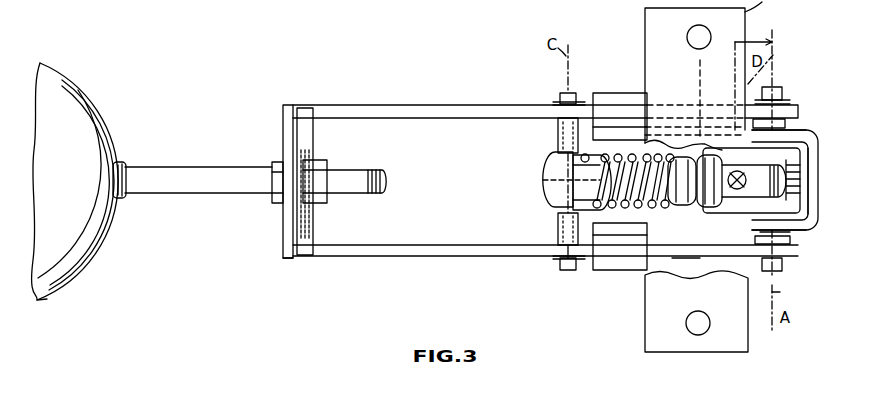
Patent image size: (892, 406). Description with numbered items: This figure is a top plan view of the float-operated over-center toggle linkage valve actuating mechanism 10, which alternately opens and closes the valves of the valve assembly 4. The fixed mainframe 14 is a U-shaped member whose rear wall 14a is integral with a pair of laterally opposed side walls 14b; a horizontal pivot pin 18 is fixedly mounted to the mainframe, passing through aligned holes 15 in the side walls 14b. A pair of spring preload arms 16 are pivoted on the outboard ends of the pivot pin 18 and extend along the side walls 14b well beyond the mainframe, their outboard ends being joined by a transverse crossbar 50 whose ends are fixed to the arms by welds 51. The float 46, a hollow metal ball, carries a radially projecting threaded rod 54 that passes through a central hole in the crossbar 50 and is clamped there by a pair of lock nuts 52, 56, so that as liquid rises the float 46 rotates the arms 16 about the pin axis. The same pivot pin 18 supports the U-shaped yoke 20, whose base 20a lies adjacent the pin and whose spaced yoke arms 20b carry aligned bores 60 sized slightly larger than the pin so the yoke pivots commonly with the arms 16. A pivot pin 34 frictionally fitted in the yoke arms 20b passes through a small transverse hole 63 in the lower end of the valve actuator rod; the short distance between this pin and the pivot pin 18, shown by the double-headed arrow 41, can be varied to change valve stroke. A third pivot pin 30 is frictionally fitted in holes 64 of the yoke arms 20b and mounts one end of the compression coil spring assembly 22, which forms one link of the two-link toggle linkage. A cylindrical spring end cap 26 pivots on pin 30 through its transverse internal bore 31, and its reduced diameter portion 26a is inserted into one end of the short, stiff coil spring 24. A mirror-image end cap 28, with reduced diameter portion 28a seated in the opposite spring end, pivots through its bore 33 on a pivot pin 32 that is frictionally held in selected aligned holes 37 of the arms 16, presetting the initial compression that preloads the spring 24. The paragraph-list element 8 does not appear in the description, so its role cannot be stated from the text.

The valve assembly 4 is at (767, 233).
The mounting plate 8 is at (690, 82).
The valve actuating mechanism 10 is at (318, 294).
The mainframe 14 is at (818, 140).
The rear wall 14a is at (810, 187).
The side walls 14b is at (800, 130).
The holes 15 is at (790, 118).
The spring preload arms 16 is at (407, 104).
The pivot pin 18 is at (777, 85).
The yoke 20 is at (802, 172).
The base 20a is at (806, 200).
The yoke arms 20b is at (684, 200).
The compression coil spring assembly 22 is at (618, 212).
The coil spring 24 is at (558, 223).
The spring end cap 26 is at (648, 208).
The reduced diameter portion 26a is at (657, 180).
The spring end cap 28 is at (553, 160).
The reduced diameter portion 28a is at (550, 196).
The pivot pin 30 is at (688, 104).
The internal bore 31 is at (650, 108).
The pivot pin 32 is at (572, 275).
The bore 33 is at (555, 180).
The pivot pin 34 is at (716, 280).
The holes 37 is at (553, 106).
The offset dimension 41 is at (763, 42).
The float 46 is at (80, 133).
The crossbar 50 is at (283, 238).
The welds 51 is at (309, 123).
The lock nut 52 is at (325, 167).
The threaded rod 54 is at (153, 177).
The lock nut 56 is at (272, 163).
The bores 60 is at (814, 232).
The hole 63 is at (745, 167).
The holes 64 is at (680, 270).